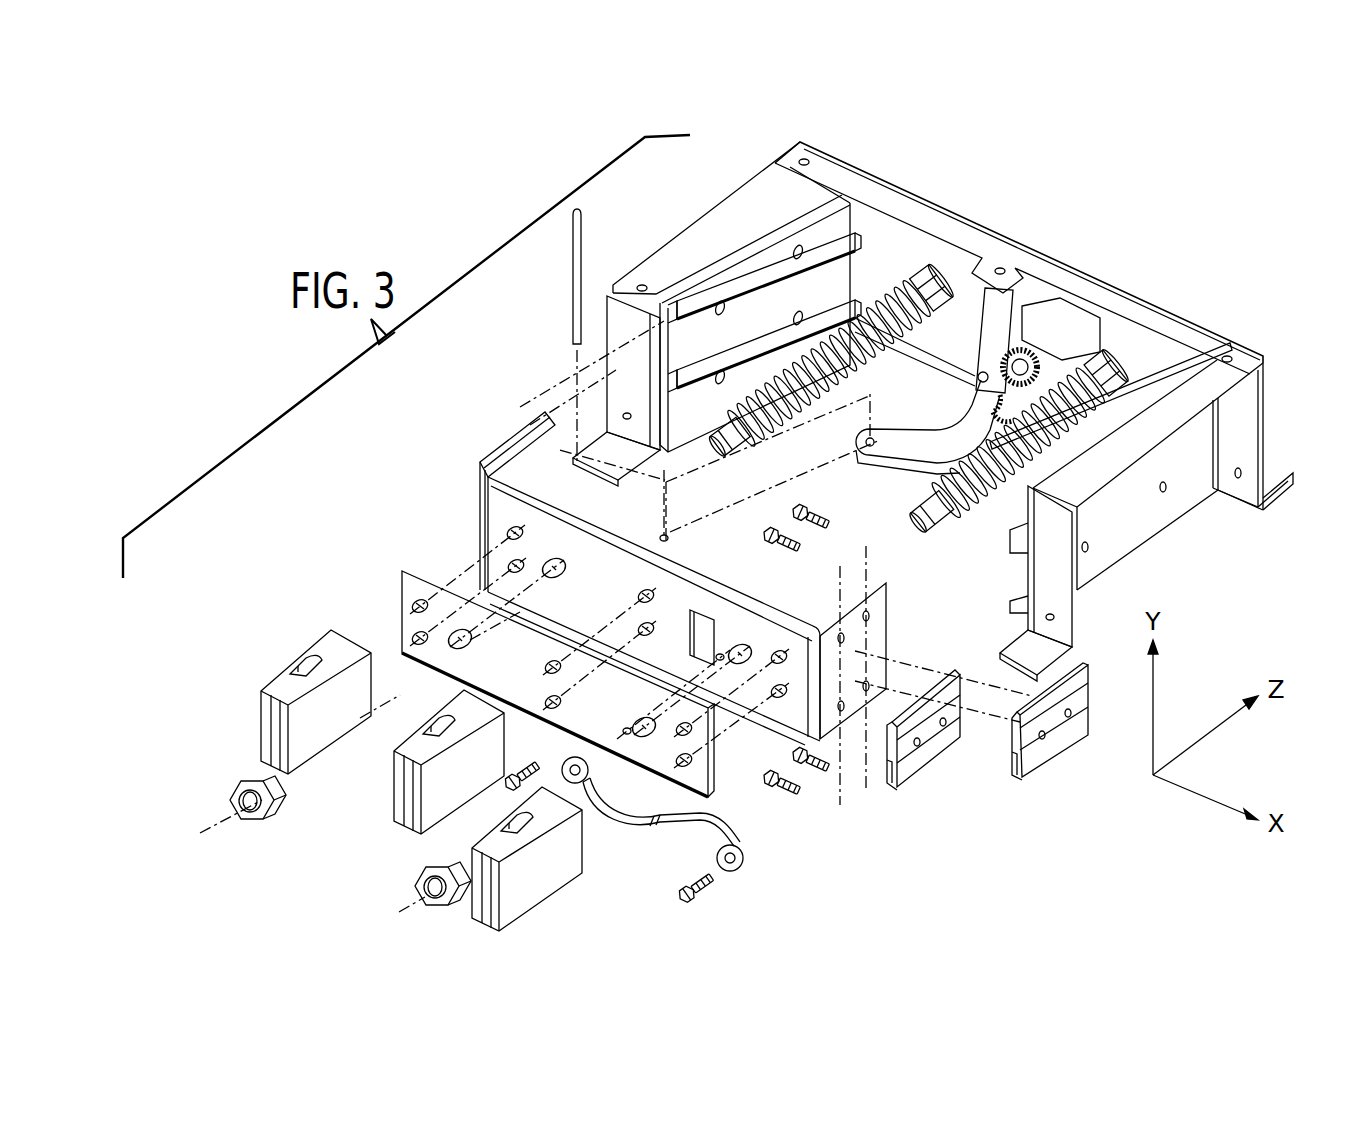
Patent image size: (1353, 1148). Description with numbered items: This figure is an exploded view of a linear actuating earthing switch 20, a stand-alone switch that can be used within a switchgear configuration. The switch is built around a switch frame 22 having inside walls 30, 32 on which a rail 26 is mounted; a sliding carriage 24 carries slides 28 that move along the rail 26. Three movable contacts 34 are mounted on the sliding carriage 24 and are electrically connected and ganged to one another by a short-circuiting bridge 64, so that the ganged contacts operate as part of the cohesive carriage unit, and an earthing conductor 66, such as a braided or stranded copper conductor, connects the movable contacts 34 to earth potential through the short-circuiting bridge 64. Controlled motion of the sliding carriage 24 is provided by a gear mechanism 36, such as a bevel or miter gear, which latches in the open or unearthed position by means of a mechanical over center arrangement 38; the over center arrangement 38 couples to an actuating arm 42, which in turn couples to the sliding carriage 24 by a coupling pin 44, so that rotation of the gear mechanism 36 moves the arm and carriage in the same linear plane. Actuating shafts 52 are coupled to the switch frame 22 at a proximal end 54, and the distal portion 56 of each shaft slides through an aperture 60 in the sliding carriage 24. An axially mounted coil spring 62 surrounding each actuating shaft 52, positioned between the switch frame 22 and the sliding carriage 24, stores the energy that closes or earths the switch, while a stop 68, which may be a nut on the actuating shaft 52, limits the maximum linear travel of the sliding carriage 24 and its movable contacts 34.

The linear actuating earthing switch 20 is at (1152, 265).
The switch frame 22 is at (1168, 327).
The sliding carriage 24 is at (579, 600).
The rail 26 is at (853, 255).
The slides 28 is at (920, 765).
The inside wall 30 is at (710, 226).
The inside wall 32 is at (1108, 455).
The movable contacts 34 is at (331, 712).
The gear mechanism 36 is at (1036, 351).
The over center arrangement 38 is at (983, 359).
The actuating arm 42 is at (897, 437).
The coupling pin 44 is at (572, 289).
The actuating shafts 52 is at (953, 510).
The proximal end 54 is at (933, 266).
The distal portion 56 is at (749, 442).
The aperture 60 is at (452, 626).
The coil spring 62 is at (978, 503).
The short-circuiting bridge 64 is at (581, 716).
The earthing conductor 66 is at (633, 828).
The stop 68 is at (421, 867).